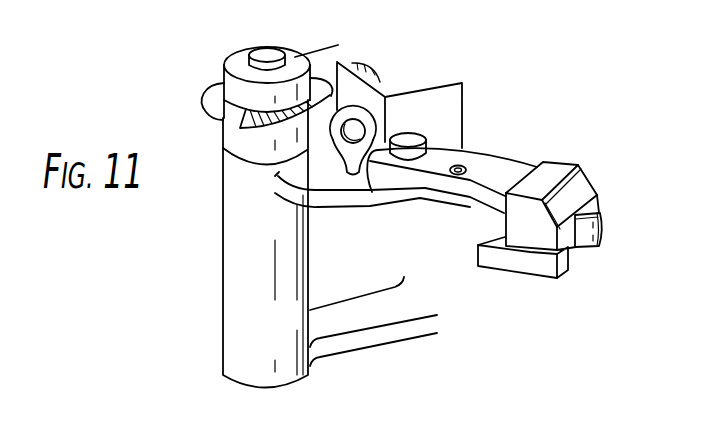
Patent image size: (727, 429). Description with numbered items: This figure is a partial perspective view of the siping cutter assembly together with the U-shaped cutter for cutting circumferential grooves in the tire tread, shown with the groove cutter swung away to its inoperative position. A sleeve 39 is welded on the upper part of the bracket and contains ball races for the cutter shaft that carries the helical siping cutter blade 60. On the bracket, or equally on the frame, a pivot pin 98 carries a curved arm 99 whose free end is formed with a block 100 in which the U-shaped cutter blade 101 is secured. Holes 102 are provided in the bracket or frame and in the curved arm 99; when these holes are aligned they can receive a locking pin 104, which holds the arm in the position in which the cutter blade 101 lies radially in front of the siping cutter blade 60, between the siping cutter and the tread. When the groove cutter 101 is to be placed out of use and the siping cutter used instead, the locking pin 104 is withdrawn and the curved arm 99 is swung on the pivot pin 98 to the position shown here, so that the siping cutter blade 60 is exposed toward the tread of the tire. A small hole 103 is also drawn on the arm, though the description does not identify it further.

The sleeve 39 is at (238, 232).
The helical siping cutter blade 60 is at (204, 96).
The pivot pin 98 is at (413, 141).
The curved arm 99 is at (503, 158).
The block 100 is at (578, 187).
The U-shaped cutter blade 101 is at (596, 226).
The holes 102 is at (352, 178).
The hole 103 is at (458, 178).
The locking pin 104 is at (360, 120).